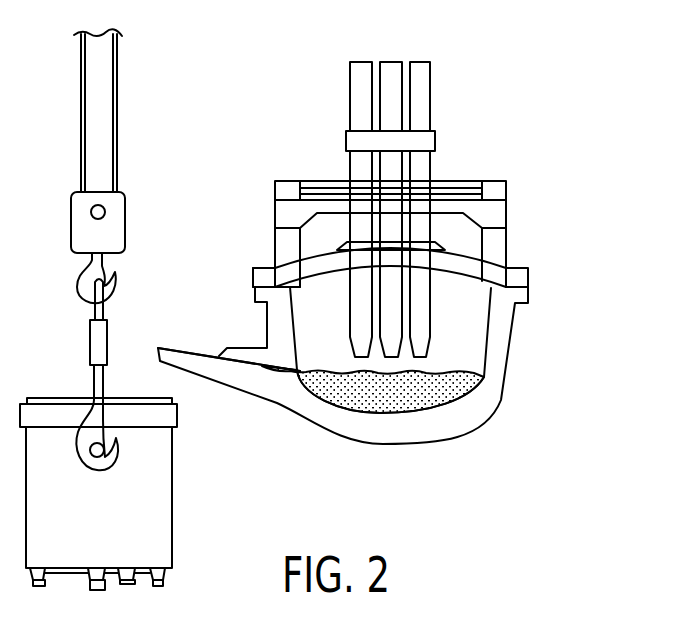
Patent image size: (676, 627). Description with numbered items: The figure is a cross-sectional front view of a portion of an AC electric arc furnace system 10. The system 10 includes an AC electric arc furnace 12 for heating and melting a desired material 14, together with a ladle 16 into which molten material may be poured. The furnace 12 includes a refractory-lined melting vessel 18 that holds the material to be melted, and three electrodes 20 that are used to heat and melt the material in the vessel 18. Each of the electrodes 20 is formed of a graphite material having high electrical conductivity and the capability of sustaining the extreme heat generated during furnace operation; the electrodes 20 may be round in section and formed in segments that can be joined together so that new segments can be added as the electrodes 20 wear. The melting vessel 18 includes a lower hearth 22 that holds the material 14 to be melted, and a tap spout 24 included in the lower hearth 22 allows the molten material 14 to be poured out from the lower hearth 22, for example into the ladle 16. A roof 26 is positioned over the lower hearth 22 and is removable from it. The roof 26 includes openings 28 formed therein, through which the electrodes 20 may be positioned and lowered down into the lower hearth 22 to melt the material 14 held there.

The AC electric arc furnace system 10 is at (384, 291).
The AC electric arc furnace 12 is at (410, 209).
The material 14 is at (402, 400).
The ladle 16 is at (140, 487).
The refractory-lined melting vessel 18 is at (428, 247).
The electrodes 20 is at (364, 101).
The lower hearth 22 is at (384, 361).
The tap spout 24 is at (227, 350).
The roof 26 is at (513, 277).
The openings 28 is at (345, 237).